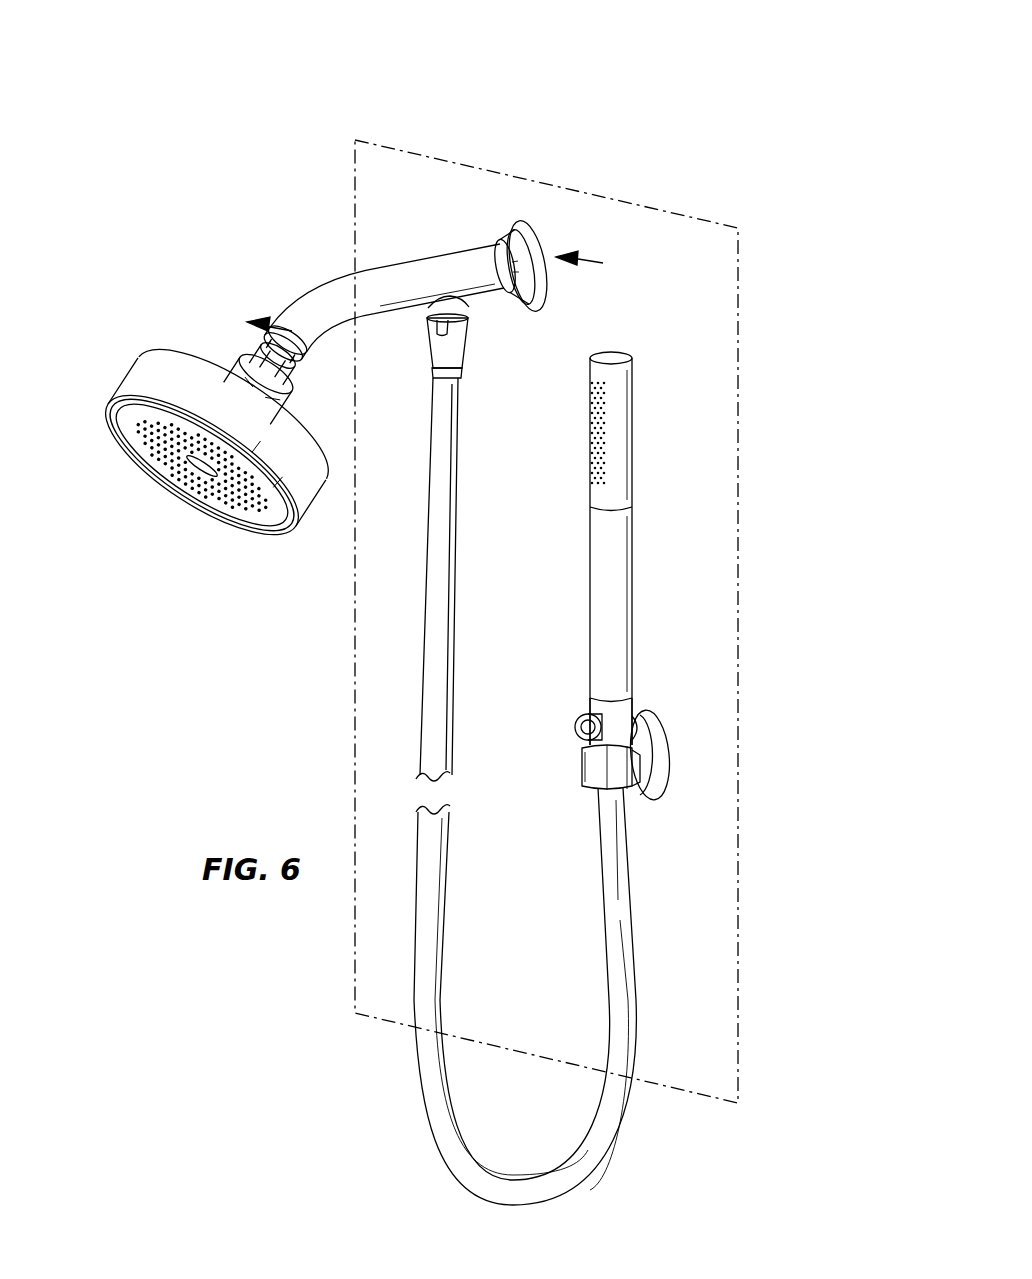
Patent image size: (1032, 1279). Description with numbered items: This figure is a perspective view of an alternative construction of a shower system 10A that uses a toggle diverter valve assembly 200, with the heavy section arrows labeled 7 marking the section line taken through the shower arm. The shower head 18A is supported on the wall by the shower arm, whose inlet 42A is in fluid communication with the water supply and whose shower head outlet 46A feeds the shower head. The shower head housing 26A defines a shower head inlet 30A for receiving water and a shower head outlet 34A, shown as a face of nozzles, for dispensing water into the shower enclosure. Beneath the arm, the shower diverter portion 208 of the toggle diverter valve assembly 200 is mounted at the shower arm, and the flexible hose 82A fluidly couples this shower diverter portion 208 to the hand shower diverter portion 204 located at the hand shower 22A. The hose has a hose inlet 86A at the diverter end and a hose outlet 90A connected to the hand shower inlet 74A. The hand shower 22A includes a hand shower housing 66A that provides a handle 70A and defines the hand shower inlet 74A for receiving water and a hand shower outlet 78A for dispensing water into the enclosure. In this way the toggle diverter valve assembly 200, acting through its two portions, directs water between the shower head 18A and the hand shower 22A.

The shower system 10A is at (815, 75).
The shower head 18A is at (96, 362).
The hand shower 22A is at (700, 455).
The shower head housing 26A is at (297, 522).
The shower head inlet 30A is at (223, 349).
The shower head outlet 34A is at (163, 515).
The inlet 42A is at (545, 226).
The shower head outlet 46A is at (278, 293).
The hand shower housing 66A is at (553, 553).
The handle 70A is at (641, 607).
The hand shower inlet 74A is at (561, 678).
The hand shower outlet 78A is at (579, 428).
The flexible hose 82A is at (441, 946).
The hose inlet 86A is at (472, 380).
The hose outlet 90A is at (573, 803).
The toggle diverter valve assembly 200 is at (649, 694).
The hand shower diverter portion 204 is at (584, 717).
The shower diverter portion 208 is at (416, 344).
The section line 7-7 arrows 7 is at (436, 297).